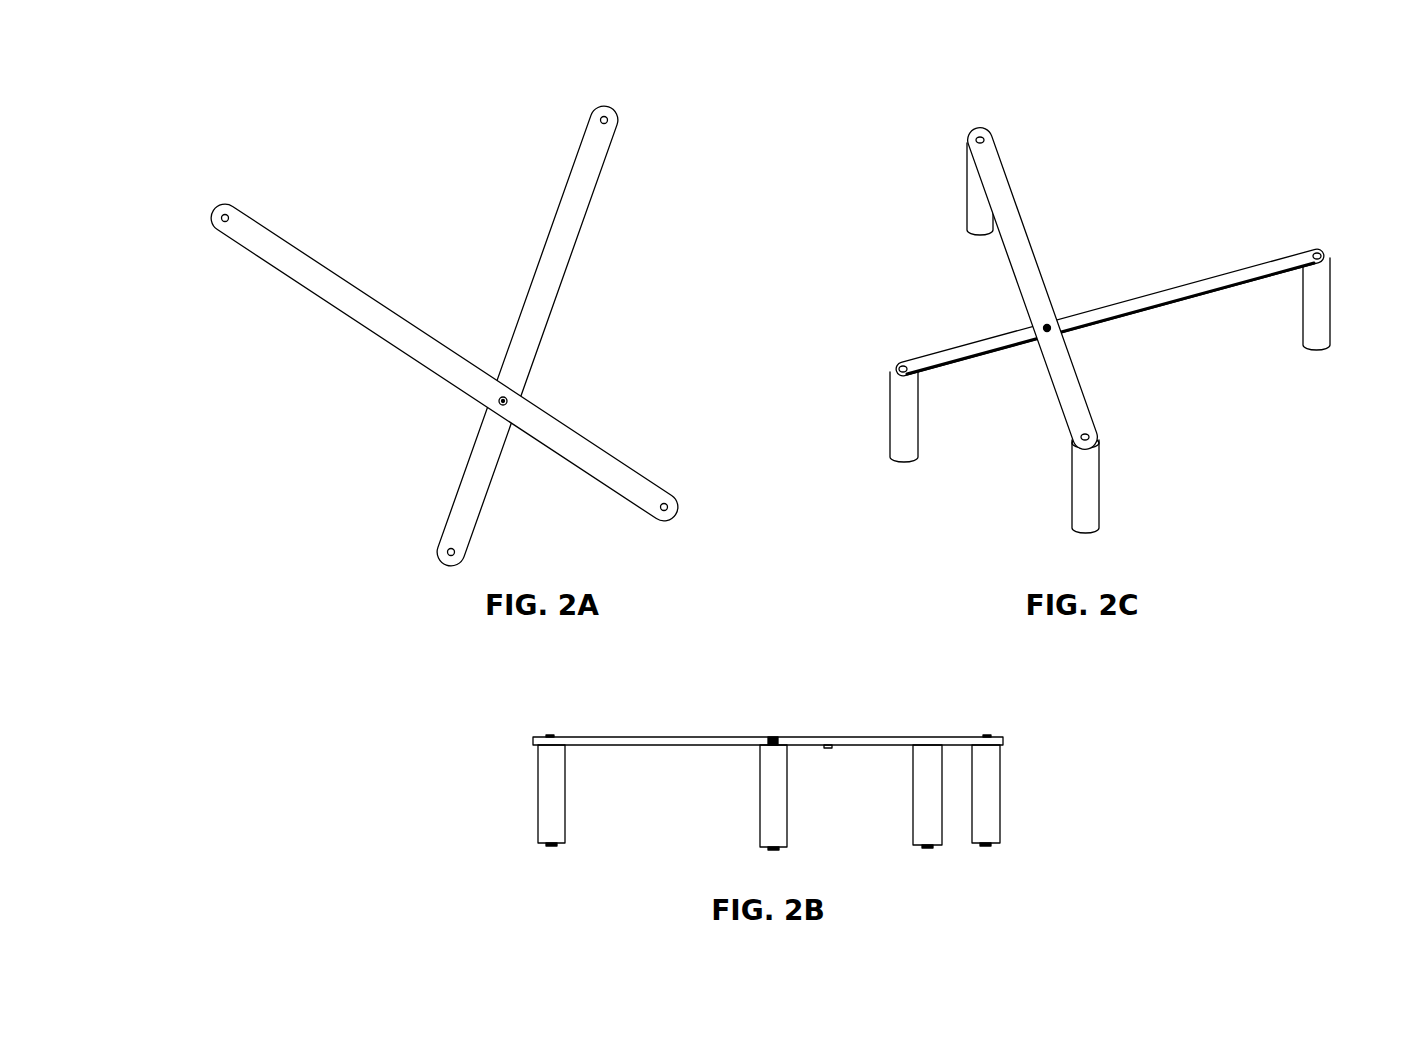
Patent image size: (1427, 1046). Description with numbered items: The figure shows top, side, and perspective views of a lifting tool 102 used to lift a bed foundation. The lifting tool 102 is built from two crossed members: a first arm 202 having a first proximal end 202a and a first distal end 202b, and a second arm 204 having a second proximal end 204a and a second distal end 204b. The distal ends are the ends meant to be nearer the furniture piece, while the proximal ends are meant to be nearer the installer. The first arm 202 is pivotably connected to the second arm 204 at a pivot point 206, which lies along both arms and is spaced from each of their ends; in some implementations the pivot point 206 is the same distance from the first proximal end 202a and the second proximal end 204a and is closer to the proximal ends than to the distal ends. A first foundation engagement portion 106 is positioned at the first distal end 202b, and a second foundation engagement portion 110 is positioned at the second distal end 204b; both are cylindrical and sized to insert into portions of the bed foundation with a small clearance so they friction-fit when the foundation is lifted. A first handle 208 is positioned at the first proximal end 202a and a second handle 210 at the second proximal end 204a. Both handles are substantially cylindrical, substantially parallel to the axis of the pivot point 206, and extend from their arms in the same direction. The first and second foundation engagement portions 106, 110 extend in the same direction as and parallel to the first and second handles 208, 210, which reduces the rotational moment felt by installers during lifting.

In FIG. 2A, the lifting tool 102 is at (252, 96).
In FIG. 2C, the lifting tool 102 is at (1185, 40).
In FIG. 2B, the lifting tool 102 is at (968, 692).
In FIG. 2C, the first foundation engagement portion 106 is at (1300, 327).
In FIG. 2B, the first foundation engagement portion 106 is at (775, 811).
In FIG. 2C, the second foundation engagement portion 110 is at (970, 208).
In FIG. 2B, the second foundation engagement portion 110 is at (548, 817).
In FIG. 2A, the first arm 202 is at (526, 322).
In FIG. 2C, the first arm 202 is at (1111, 317).
In FIG. 2A, the first proximal end 202a is at (440, 548).
In FIG. 2C, the first proximal end 202a is at (893, 374).
In FIG. 2A, the first distal end 202b is at (606, 108).
In FIG. 2C, the first distal end 202b is at (1322, 260).
In FIG. 2A, the second arm 204 is at (445, 350).
In FIG. 2C, the second arm 204 is at (978, 290).
In FIG. 2A, the second proximal end 204a is at (673, 502).
In FIG. 2C, the second proximal end 204a is at (1072, 440).
In FIG. 2A, the second distal end 204b is at (212, 222).
In FIG. 2C, the second distal end 204b is at (968, 142).
In FIG. 2A, the pivot point 206 is at (508, 402).
In FIG. 2C, the pivot point 206 is at (1049, 326).
In FIG. 2C, the first handle 208 is at (902, 408).
In FIG. 2B, the first handle 208 is at (921, 806).
In FIG. 2C, the second handle 210 is at (1087, 498).
In FIG. 2B, the second handle 210 is at (987, 806).